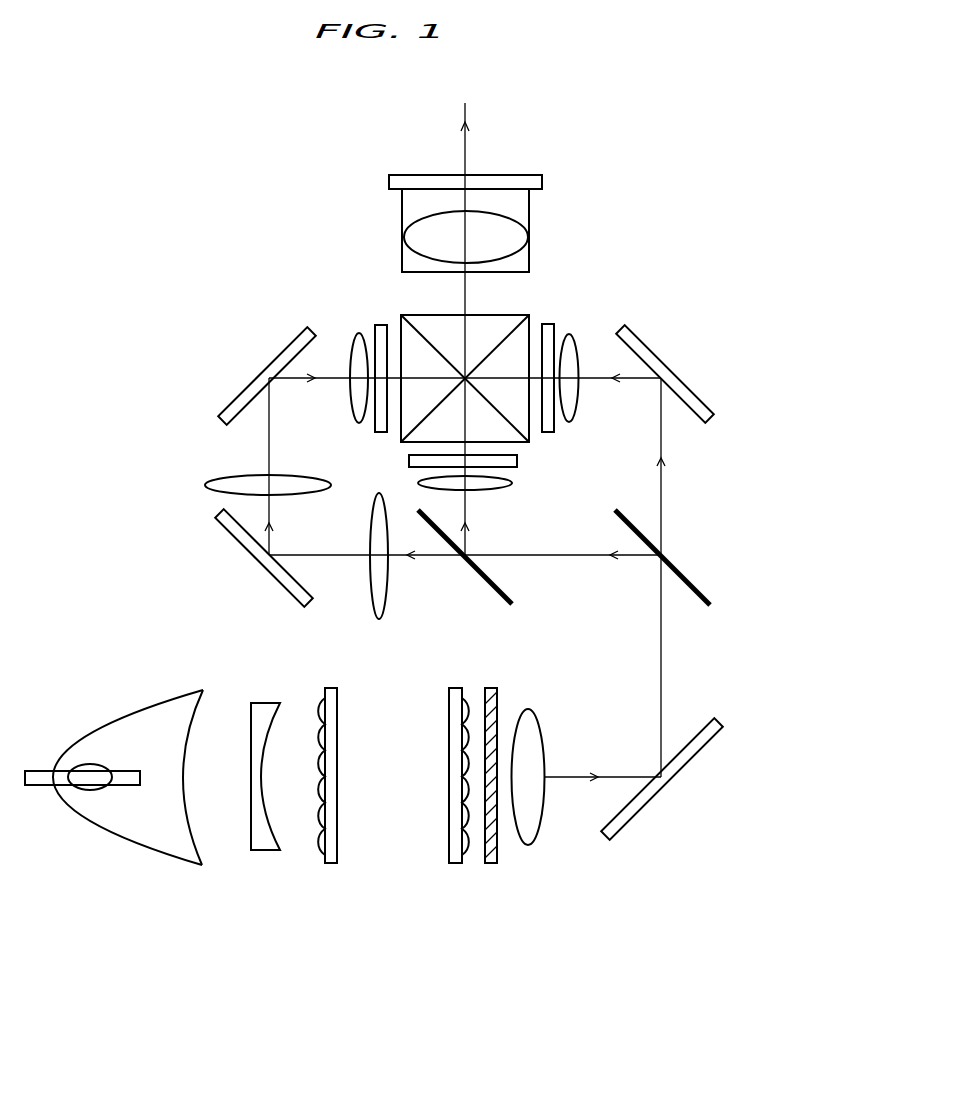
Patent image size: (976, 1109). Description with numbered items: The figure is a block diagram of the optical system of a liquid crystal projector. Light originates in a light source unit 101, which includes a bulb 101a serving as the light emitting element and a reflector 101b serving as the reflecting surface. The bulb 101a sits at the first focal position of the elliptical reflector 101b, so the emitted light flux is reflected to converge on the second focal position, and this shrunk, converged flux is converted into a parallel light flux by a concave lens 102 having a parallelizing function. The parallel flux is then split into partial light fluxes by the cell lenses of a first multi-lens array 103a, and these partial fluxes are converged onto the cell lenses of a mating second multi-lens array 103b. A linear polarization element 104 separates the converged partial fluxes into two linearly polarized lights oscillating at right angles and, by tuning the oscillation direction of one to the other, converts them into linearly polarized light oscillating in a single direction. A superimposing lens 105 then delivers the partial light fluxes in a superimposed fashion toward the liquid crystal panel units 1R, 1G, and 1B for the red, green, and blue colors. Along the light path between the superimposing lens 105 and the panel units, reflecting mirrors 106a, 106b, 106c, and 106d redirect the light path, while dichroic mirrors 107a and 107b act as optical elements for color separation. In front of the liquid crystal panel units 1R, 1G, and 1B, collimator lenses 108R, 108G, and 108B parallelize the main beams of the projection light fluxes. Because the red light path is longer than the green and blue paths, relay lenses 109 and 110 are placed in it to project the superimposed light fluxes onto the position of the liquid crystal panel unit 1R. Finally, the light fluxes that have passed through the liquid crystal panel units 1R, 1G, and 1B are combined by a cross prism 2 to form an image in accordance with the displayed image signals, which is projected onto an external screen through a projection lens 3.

The liquid crystal panel unit 1R is at (381, 324).
The liquid crystal panel unit 1G is at (519, 461).
The liquid crystal panel unit 1B is at (549, 322).
The cross prism 2 is at (518, 340).
The projection lens 3 is at (443, 211).
The light source unit 101 is at (114, 826).
The bulb 101a is at (88, 784).
The reflector 101b is at (150, 845).
The concave lens 102 is at (263, 851).
The first multi-lens array 103a is at (330, 864).
The second multi-lens array 103b is at (455, 864).
The linear polarization element 104 is at (491, 864).
The superimposing lens 105 is at (528, 845).
The reflecting mirror 106a is at (645, 806).
The reflecting mirror 106b is at (643, 333).
The reflecting mirror 106c is at (280, 592).
The reflecting mirror 106d is at (286, 341).
The dichroic mirror 107a is at (700, 591).
The dichroic mirror 107b is at (503, 590).
The collimator lens 108R is at (356, 336).
The collimator lens 108G is at (512, 485).
The collimator lens 108B is at (578, 337).
The relay lens 109 is at (389, 585).
The relay lens 110 is at (204, 487).